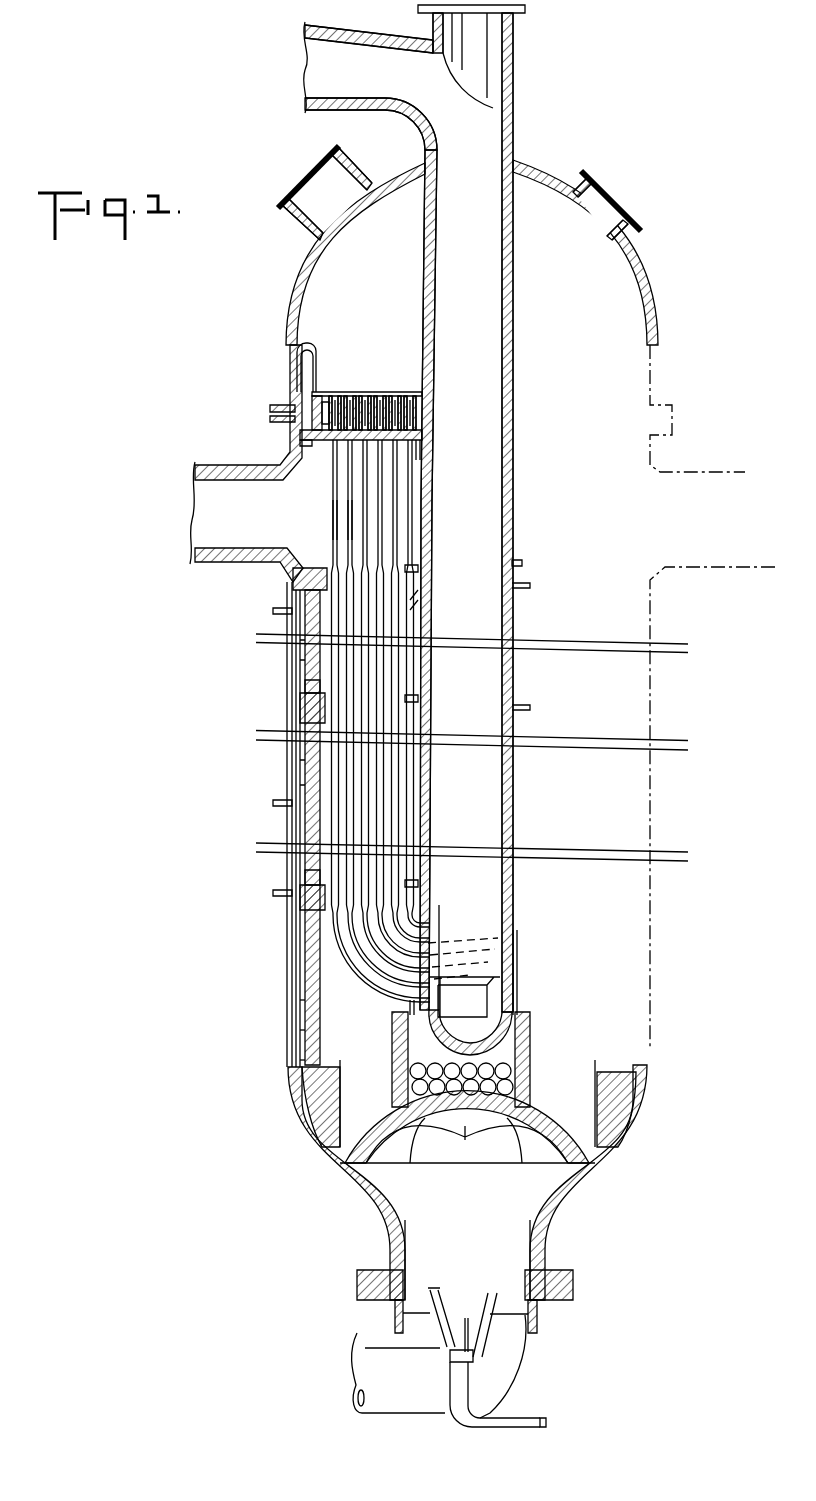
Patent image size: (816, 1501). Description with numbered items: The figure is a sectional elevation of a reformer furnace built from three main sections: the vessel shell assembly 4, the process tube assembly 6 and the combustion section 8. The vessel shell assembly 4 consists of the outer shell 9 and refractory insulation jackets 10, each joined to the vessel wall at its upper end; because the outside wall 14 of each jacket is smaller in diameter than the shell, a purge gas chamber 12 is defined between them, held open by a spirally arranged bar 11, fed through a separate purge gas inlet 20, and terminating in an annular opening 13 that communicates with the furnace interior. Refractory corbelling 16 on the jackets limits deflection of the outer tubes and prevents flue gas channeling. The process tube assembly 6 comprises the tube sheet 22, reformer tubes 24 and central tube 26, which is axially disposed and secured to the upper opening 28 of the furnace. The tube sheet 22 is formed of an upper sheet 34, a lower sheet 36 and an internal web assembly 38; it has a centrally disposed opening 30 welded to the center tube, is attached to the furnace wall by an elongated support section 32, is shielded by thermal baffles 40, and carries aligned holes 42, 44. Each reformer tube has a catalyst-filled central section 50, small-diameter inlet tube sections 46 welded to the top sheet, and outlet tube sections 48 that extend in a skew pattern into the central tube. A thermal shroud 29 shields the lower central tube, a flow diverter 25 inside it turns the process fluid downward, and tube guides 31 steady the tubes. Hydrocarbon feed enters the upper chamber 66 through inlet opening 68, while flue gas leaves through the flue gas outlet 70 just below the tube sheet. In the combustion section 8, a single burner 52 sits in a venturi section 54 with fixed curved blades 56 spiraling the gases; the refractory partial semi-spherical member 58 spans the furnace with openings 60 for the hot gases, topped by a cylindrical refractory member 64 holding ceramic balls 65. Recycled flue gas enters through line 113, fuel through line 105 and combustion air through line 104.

The vessel shell assembly 4 is at (286, 588).
The process tube assembly 6 is at (352, 820).
The combustion section 8 is at (436, 1205).
The outer shell 9 is at (293, 655).
The insulation jacket 10 is at (300, 775).
The bar 11 is at (300, 1060).
The purge gas chamber 12 is at (300, 1030).
The annular opening 13 is at (305, 688).
The outside wall 14 is at (300, 1005).
The refractory corbelling 16 is at (318, 702).
The purge gas inlet 20 is at (280, 610).
The tube sheet 22 is at (318, 392).
The reformer tubes 24 is at (420, 606).
The flow diverter 25 is at (470, 1028).
The central tube 26 is at (513, 566).
The upper opening 28 is at (513, 162).
The thermal shroud 29 is at (516, 945).
The centrally disposed opening 30 is at (419, 392).
The tube guides 31 is at (418, 575).
The elongated support section 32 is at (303, 342).
The upper sheet 34 is at (343, 396).
The lower sheet 36 is at (295, 436).
The internal web assembly 38 is at (412, 412).
The thermal baffles 40 is at (424, 447).
The holes 42 is at (379, 396).
The holes 44 is at (356, 446).
The inlet tube sections 46 is at (395, 526).
The outlet tube sections 48 is at (434, 950).
The central section 50 is at (410, 680).
The burner 52 is at (462, 1333).
The venturi section 54 is at (450, 1353).
The fixed curved blades 56 is at (482, 1300).
The partial semi-spherical member 58 is at (528, 1122).
The openings 60 is at (620, 1140).
The cylindrical refractory member 64 is at (512, 1080).
The ceramic balls 65 is at (528, 1050).
The upper chamber 66 is at (406, 252).
The inlet opening 68 is at (612, 212).
The flue gas outlet 70 is at (196, 548).
The line 104 is at (452, 1398).
The line 105 is at (520, 1423).
The line 113 is at (357, 1345).